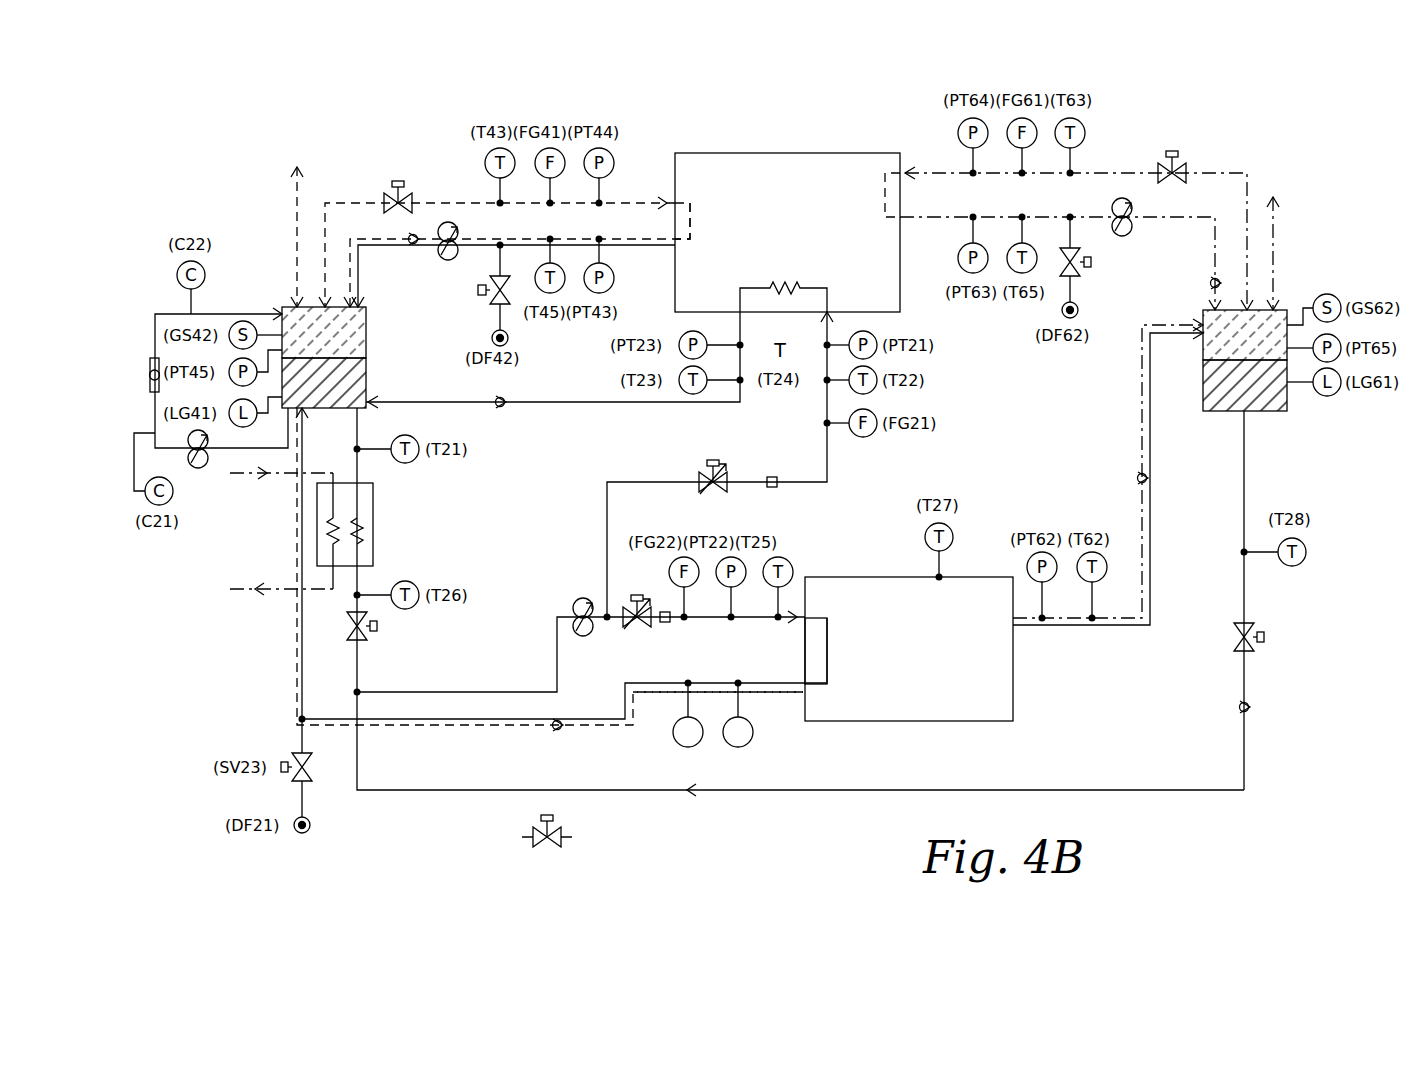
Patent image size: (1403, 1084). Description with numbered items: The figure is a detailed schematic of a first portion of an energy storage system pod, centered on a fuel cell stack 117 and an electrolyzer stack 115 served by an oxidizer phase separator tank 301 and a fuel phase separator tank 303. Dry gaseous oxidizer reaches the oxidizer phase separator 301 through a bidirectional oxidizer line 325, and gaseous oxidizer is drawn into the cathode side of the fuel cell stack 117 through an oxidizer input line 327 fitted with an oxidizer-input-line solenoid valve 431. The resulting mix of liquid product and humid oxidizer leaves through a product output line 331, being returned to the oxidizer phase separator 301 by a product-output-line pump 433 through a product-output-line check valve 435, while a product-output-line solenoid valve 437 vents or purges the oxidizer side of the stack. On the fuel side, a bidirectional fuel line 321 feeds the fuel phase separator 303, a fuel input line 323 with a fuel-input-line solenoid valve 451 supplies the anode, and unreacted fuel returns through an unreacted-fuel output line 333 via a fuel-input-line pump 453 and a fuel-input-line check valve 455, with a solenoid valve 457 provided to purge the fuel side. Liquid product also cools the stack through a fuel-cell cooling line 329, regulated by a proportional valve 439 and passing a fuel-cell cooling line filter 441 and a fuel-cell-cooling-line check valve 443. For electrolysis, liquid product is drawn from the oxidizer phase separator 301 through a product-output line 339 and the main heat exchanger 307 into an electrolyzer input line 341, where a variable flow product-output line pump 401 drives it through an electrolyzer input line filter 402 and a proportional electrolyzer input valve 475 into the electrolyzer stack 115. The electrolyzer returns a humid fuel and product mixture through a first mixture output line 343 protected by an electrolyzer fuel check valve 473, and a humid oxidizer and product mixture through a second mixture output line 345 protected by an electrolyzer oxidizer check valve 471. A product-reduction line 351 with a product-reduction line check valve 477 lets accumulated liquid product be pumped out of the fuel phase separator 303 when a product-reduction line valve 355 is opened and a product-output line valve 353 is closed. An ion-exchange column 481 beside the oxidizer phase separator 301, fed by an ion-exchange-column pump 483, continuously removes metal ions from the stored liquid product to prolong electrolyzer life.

The electrolyzer stack 115 is at (935, 699).
The fuel cell stack 117 is at (862, 274).
The oxidizer phase separator tank 301 is at (368, 372).
The fuel phase separator tank 303 is at (1290, 305).
The main heat exchanger 307 is at (373, 530).
The bidirectional fuel line 321 is at (1280, 228).
The fuel input line 323 is at (1105, 170).
The bidirectional oxidizer line 325 is at (296, 243).
The oxidizer input line 327 is at (452, 200).
The fuel-cell cooling line 329 is at (575, 405).
The product output line 331 is at (432, 237).
The unreacted-fuel output line 333 is at (1222, 226).
The product-output line 339 is at (357, 580).
The electrolyzer input line 341 is at (560, 676).
The first mixture output line 343 is at (1148, 630).
The second mixture output line 345 is at (757, 690).
The product-reduction line 351 is at (1105, 788).
The product-output line valve 353 is at (348, 618).
The product-reduction line valve 355 is at (1238, 630).
The product-output line pump 401 is at (580, 610).
The electrolyzer input line filter 402 is at (667, 623).
The oxidizer-input-line solenoid valve 431 is at (390, 194).
The product-output-line pump 433 is at (452, 258).
The product-output-line check valve 435 is at (413, 248).
The product-output-line solenoid valve 437 is at (482, 292).
The proportional valve 439 is at (703, 478).
The fuel-cell cooling line filter 441 is at (772, 476).
The fuel-cell-cooling-line check valve 443 is at (505, 399).
The fuel-input-line solenoid valve 451 is at (1180, 165).
The fuel-input-line pump 453 is at (1120, 200).
The fuel-input-line check valve 455 is at (1210, 280).
The solenoid valve 457 is at (1080, 272).
The electrolyzer oxidizer check valve 471 is at (560, 732).
The electrolyzer fuel check valve 473 is at (1145, 475).
The electrolyzer input valve 475 is at (637, 630).
The product-reduction line check valve 477 is at (1240, 706).
The ion-exchange column 481 is at (150, 372).
The ion-exchange-column pump 483 is at (206, 462).